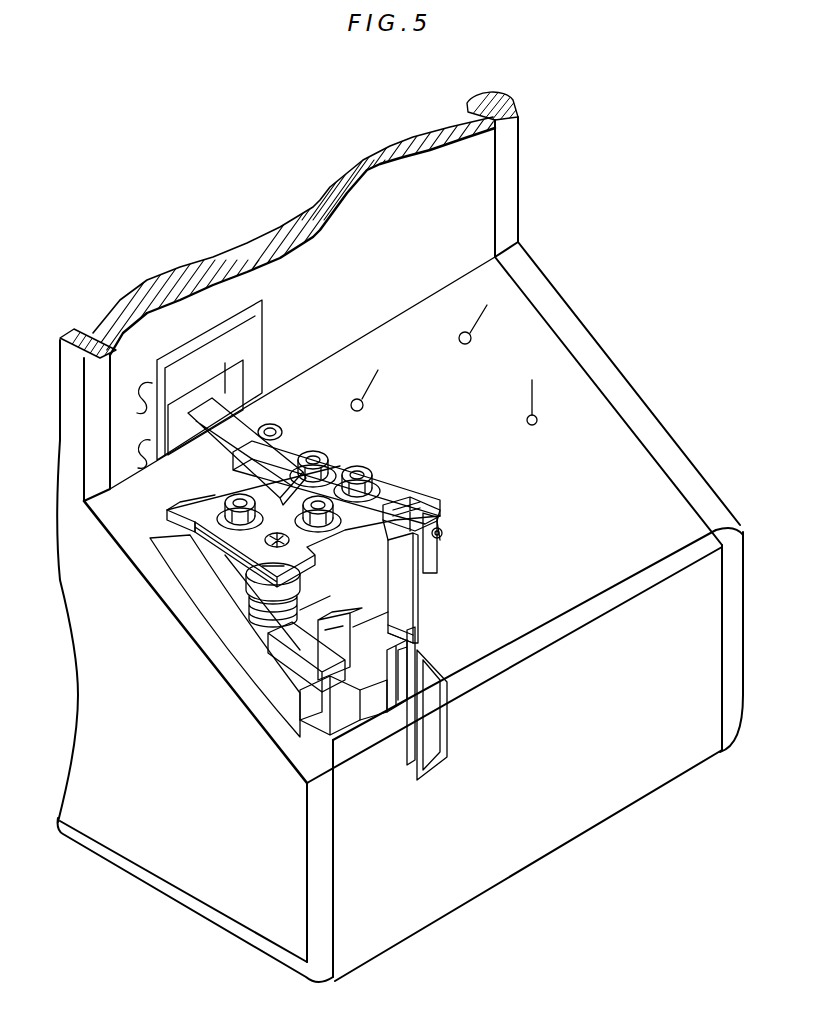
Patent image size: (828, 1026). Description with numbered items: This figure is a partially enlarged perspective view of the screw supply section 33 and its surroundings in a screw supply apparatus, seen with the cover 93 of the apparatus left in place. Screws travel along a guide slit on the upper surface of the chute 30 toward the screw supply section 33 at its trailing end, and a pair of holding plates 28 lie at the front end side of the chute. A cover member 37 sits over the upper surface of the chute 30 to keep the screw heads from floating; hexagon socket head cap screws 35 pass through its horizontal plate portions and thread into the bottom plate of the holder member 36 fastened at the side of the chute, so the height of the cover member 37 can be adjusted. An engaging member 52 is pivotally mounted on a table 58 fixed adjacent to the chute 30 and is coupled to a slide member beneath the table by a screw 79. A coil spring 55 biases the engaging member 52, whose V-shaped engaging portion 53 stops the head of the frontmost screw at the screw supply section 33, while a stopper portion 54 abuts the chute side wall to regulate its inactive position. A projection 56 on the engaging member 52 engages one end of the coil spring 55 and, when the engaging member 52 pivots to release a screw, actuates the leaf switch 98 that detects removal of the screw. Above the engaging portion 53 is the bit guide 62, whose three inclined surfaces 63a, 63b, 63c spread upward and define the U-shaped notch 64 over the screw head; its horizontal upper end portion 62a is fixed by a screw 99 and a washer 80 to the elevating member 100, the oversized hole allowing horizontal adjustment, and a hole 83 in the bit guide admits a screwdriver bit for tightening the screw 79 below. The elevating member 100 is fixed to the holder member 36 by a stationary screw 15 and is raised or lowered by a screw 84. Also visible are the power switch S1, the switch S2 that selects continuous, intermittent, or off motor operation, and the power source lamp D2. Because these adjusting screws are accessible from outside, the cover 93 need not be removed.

The cover 93 is at (622, 440).
The chute 30 is at (205, 428).
The cover member 37 is at (233, 437).
The screw 84 is at (330, 440).
The power switch S1 is at (483, 310).
The switch S2 is at (374, 374).
The power source lamp D2 is at (533, 386).
The screw 99 is at (227, 492).
The hole 83 is at (293, 542).
The hexagon socket head cap screws 35 is at (368, 462).
The screw 79 is at (262, 606).
The washer 80 is at (250, 578).
The inclined surface 63a is at (407, 585).
The inclined surface 63b is at (412, 510).
The bit guide 62 is at (430, 511).
The holder member 36 is at (433, 515).
The stationary screw 15 is at (442, 533).
The elevating member 100 is at (390, 483).
The stopper portion 54 is at (353, 627).
The inclined surface 63c is at (407, 642).
The screw supply section 33 is at (413, 647).
The U-shaped notch 64 is at (447, 673).
The holding plates 28 is at (443, 733).
The projection 56 is at (300, 727).
The table 58 is at (300, 677).
The engaging member 52 is at (300, 640).
The leaf switch 98 is at (337, 673).
The engaging portion 53 is at (380, 683).
The coil spring 55 is at (300, 610).
The upper end portion 62a is at (227, 572).